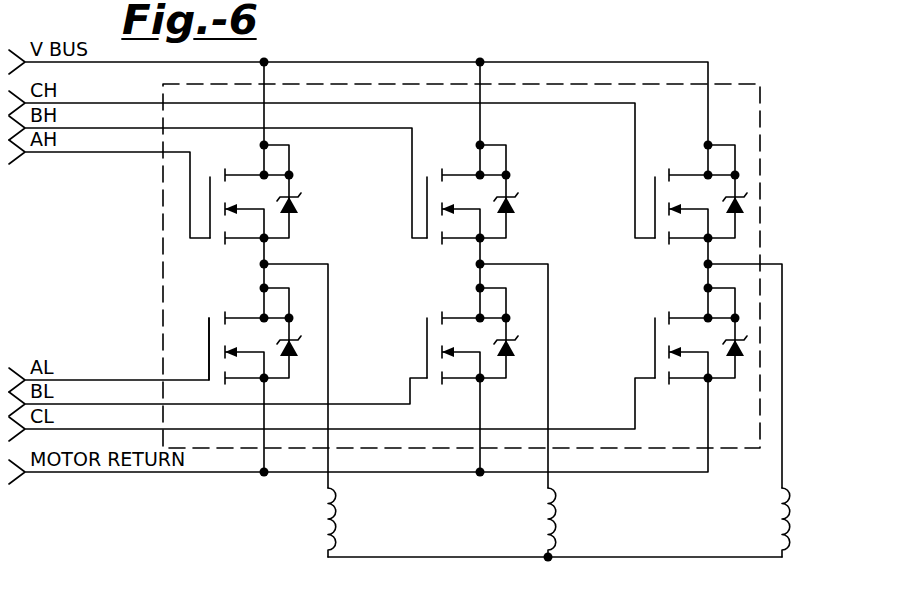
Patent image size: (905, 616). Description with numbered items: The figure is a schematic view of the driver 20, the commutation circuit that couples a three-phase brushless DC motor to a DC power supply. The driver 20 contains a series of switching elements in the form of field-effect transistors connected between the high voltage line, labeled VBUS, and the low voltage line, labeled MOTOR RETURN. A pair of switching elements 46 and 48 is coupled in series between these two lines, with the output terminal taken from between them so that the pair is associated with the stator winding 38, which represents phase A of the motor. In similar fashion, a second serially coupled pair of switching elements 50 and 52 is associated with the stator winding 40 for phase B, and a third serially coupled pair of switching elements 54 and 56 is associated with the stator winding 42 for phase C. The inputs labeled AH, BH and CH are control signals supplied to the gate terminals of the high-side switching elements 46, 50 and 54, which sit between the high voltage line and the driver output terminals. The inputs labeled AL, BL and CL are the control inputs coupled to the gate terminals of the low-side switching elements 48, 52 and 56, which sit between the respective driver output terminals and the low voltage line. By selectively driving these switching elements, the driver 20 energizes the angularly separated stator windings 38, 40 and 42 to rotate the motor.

The driver 20 is at (551, 83).
The stator winding 38 is at (332, 502).
The stator winding 40 is at (552, 502).
The stator winding 42 is at (782, 502).
The switching element 46 is at (290, 228).
The switching element 48 is at (288, 366).
The switching element 50 is at (510, 220).
The switching element 52 is at (507, 366).
The switching element 54 is at (745, 227).
The switching element 56 is at (735, 367).